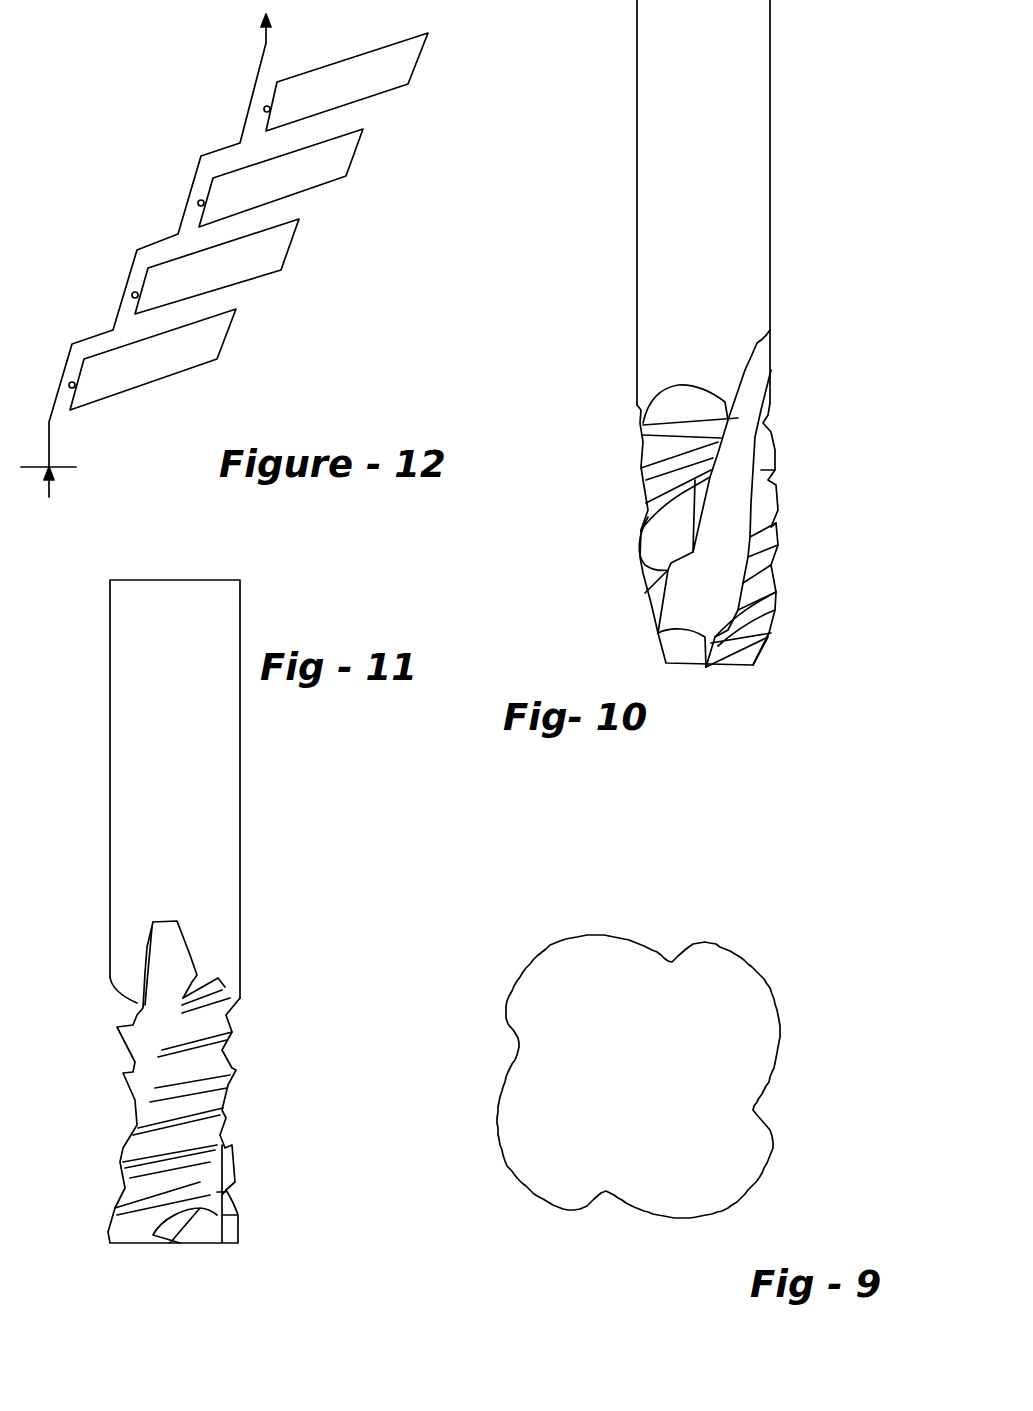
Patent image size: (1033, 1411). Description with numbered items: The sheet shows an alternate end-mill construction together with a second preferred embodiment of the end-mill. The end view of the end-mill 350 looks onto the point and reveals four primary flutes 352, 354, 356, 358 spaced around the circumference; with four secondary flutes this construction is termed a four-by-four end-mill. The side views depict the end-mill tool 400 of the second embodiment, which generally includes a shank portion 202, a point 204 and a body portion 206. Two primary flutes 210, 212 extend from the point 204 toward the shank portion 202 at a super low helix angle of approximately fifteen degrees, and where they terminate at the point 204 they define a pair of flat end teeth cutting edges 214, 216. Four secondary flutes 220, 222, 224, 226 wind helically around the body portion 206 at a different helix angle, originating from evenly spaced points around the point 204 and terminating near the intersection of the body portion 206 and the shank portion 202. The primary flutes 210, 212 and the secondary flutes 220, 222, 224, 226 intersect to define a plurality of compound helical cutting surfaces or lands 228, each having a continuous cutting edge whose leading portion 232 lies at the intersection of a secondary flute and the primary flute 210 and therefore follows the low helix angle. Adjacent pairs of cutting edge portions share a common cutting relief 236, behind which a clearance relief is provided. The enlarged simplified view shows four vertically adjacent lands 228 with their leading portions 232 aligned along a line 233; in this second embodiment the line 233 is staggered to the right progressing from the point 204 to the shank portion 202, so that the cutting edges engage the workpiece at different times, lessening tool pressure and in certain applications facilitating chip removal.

In FIG. 10, the shank portion 202 is at (753, 182).
In FIG. 11, the shank portion 202 is at (175, 789).
In FIG. 10, the point 204 is at (707, 675).
In FIG. 11, the point 204 is at (168, 1247).
In FIG. 10, the body portion 206 is at (735, 342).
In FIG. 10, the primary flute 210 is at (755, 392).
In FIG. 11, the primary flute 210 is at (162, 993).
In FIG. 11, the primary flute 212 is at (213, 1192).
In FIG. 11, the flat cutting edge 214 is at (230, 1247).
In FIG. 11, the flat cutting edge 216 is at (133, 1245).
In FIG. 10, the secondary flute 220 is at (753, 607).
In FIG. 10, the secondary flute 222 is at (773, 527).
In FIG. 10, the secondary flute 224 is at (768, 467).
In FIG. 10, the secondary flute 226 is at (770, 412).
In FIG. 11, the compound helical cutting surface (land) 228 is at (203, 978).
In FIG. 12, the compound helical cutting surface (land) 228 is at (398, 78).
In FIG. 12, the leading portion of cutting edge 232 is at (270, 107).
In FIG. 12, the line 233 is at (51, 449).
In FIG. 10, the cutting relief 236 is at (773, 433).
In FIG. 9, the end-mill 350 is at (654, 1095).
In FIG. 9, the primary flute 352 is at (672, 953).
In FIG. 9, the primary flute 354 is at (770, 1112).
In FIG. 9, the primary flute 356 is at (604, 1204).
In FIG. 9, the primary flute 358 is at (508, 1043).
In FIG. 10, the end-mill tool 400 is at (610, 324).
In FIG. 11, the end-mill tool 400 is at (278, 778).